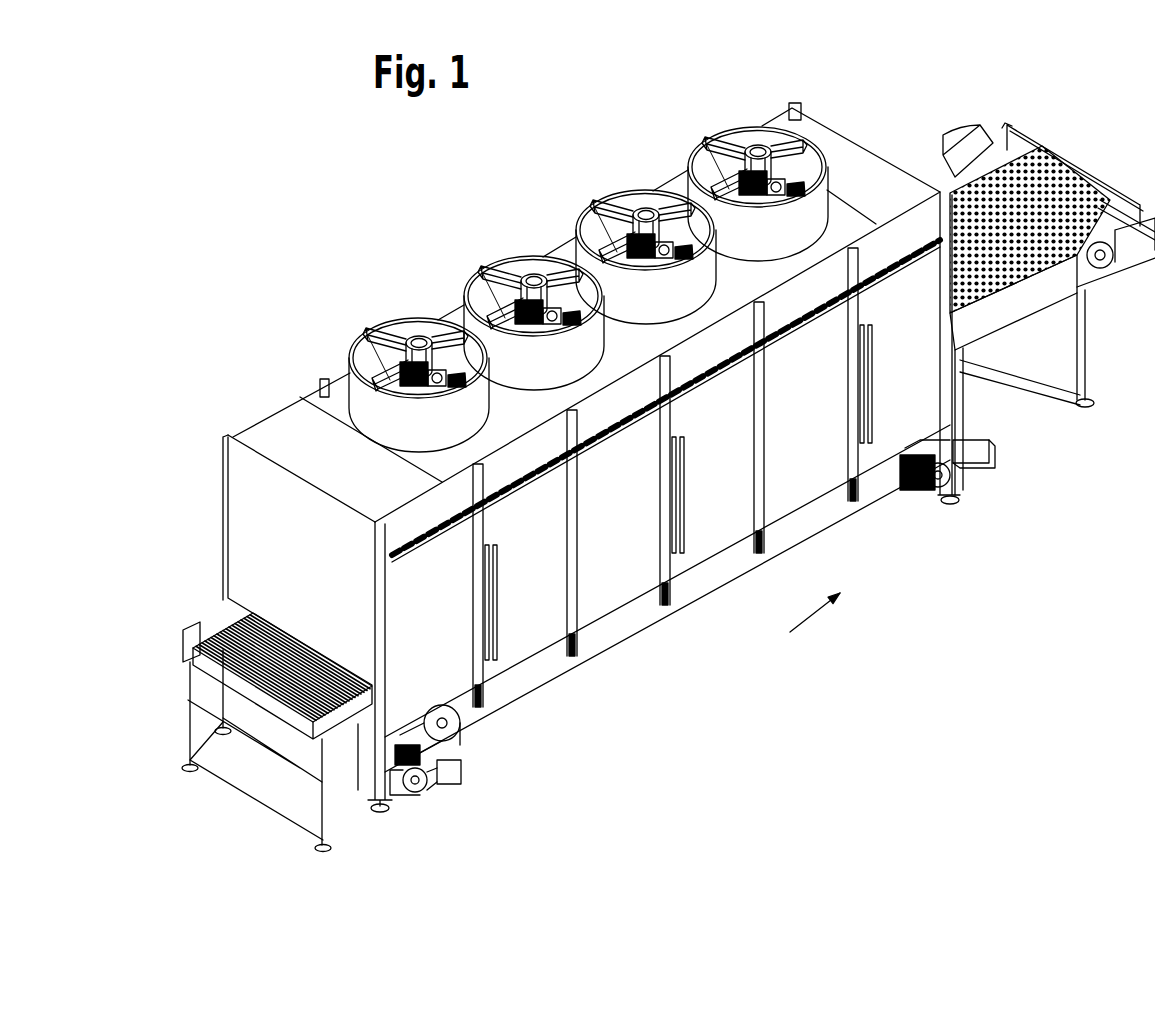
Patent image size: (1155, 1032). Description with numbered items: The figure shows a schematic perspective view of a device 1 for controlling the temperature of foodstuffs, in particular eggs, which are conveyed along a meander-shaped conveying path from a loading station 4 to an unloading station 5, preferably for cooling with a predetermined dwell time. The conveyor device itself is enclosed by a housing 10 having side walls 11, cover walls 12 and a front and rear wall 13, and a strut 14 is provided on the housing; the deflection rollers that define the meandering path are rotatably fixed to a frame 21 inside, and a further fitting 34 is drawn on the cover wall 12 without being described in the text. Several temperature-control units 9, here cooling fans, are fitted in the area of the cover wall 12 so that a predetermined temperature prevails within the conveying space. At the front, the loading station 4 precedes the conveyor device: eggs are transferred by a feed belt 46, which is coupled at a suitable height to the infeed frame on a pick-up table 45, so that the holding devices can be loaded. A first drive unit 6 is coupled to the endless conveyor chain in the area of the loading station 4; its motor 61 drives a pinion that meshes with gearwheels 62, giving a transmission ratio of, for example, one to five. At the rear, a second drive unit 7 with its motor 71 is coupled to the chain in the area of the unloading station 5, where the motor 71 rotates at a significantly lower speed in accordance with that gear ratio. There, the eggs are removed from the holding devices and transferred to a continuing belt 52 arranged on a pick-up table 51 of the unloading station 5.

The device 1 is at (630, 474).
The loading station 4 is at (251, 724).
The unloading station 5 is at (1049, 281).
The first drive unit 6 is at (502, 799).
The second drive unit 7 is at (974, 515).
The temperature-control unit 9 is at (367, 330).
The housing 10 is at (562, 250).
The side wall 11 is at (703, 517).
The cover wall 12 is at (272, 432).
The front or rear wall 13 is at (255, 477).
The strut 14 is at (797, 106).
The frame 21 is at (480, 718).
The cover bracket 34 is at (320, 380).
The pick-up table 45 is at (338, 714).
The feed belt 46 is at (283, 700).
The pick-up table 51 is at (1037, 283).
The belt 52 is at (1005, 310).
The motor 61 is at (447, 760).
The gearwheel 62 is at (452, 722).
The motor 71 is at (990, 452).